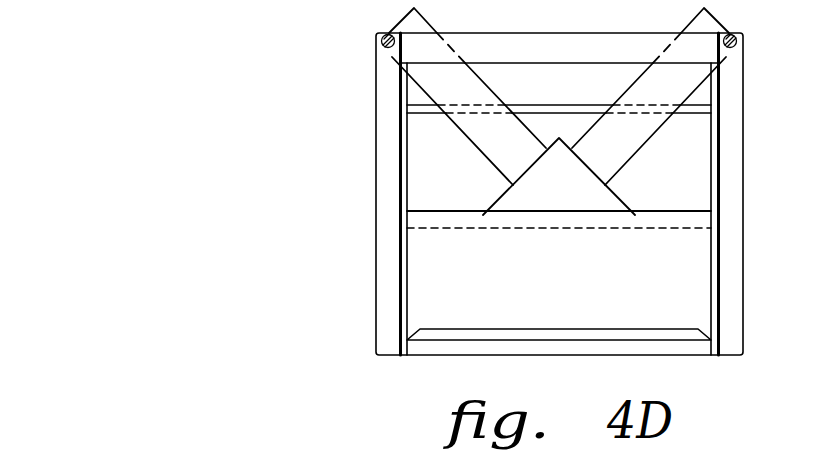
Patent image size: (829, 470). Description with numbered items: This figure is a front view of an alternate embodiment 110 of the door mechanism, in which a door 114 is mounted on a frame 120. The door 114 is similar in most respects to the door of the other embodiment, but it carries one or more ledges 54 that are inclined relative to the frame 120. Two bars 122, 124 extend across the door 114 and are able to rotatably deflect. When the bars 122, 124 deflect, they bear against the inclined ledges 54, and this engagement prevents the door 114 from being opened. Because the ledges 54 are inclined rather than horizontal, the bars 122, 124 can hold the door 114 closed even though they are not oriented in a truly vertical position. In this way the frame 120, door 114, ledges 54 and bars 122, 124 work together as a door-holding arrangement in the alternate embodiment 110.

The alternate embodiment 110 is at (176, 65).
The frame 120 is at (376, 173).
The bar 122 is at (461, 138).
The bar 124 is at (656, 138).
The ledge 54 is at (614, 192).
The door 114 is at (620, 296).